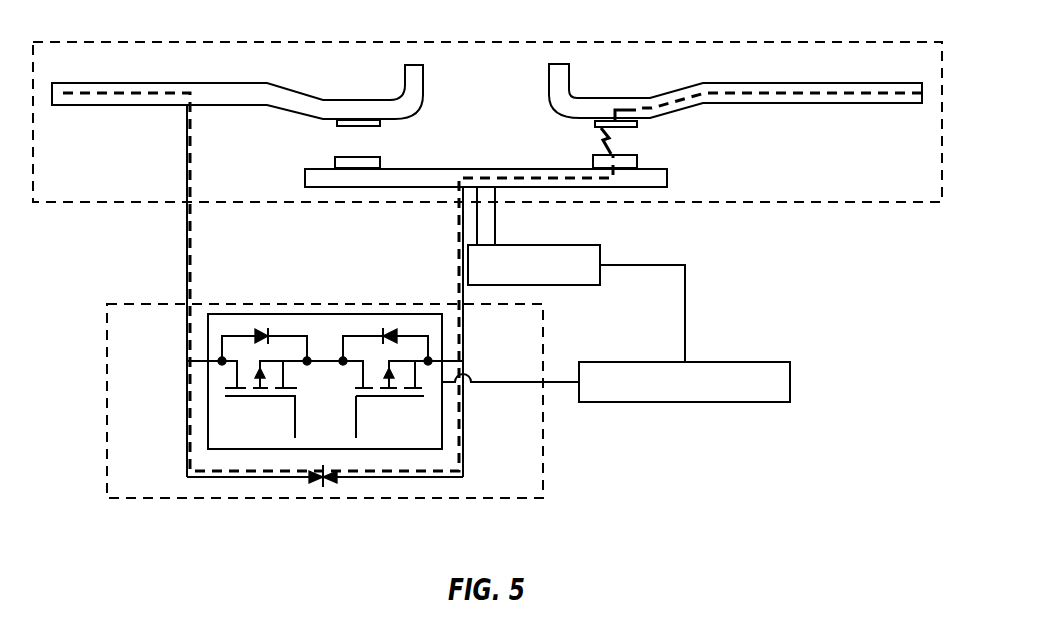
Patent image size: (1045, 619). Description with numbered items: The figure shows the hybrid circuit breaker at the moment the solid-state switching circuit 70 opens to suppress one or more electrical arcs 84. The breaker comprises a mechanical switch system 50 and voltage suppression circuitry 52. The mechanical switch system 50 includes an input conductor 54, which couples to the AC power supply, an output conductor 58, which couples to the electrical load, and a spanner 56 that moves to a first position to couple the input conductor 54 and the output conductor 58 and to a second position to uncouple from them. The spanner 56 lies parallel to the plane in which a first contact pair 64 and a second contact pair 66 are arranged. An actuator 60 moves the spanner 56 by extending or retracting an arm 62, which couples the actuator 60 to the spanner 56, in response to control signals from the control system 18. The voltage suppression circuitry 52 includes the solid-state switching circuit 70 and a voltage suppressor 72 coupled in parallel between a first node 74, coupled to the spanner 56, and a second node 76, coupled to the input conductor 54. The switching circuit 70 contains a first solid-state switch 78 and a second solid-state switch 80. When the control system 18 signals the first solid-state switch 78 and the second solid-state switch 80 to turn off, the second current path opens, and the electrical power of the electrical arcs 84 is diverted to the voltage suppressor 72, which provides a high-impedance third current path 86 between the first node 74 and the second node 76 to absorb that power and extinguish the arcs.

The control system 18 is at (792, 378).
The mechanical switch system 50 is at (478, 42).
The voltage suppression circuitry 52 is at (107, 405).
The input conductor 54 is at (160, 83).
The spanner 56 is at (485, 169).
The output conductor 58 is at (815, 84).
The actuator 60 is at (553, 245).
The arm 62 is at (497, 240).
The first contact pair 64 is at (337, 163).
The second contact pair 66 is at (637, 163).
The solid-state switching circuit 70 is at (325, 363).
The voltage suppressor 72 is at (323, 482).
The first node 74 is at (465, 440).
The second node 76 is at (187, 408).
The first solid-state switch 78 is at (268, 398).
The second solid-state switch 80 is at (385, 398).
The electrical arcs 84 is at (590, 140).
The third current path 86 is at (190, 448).